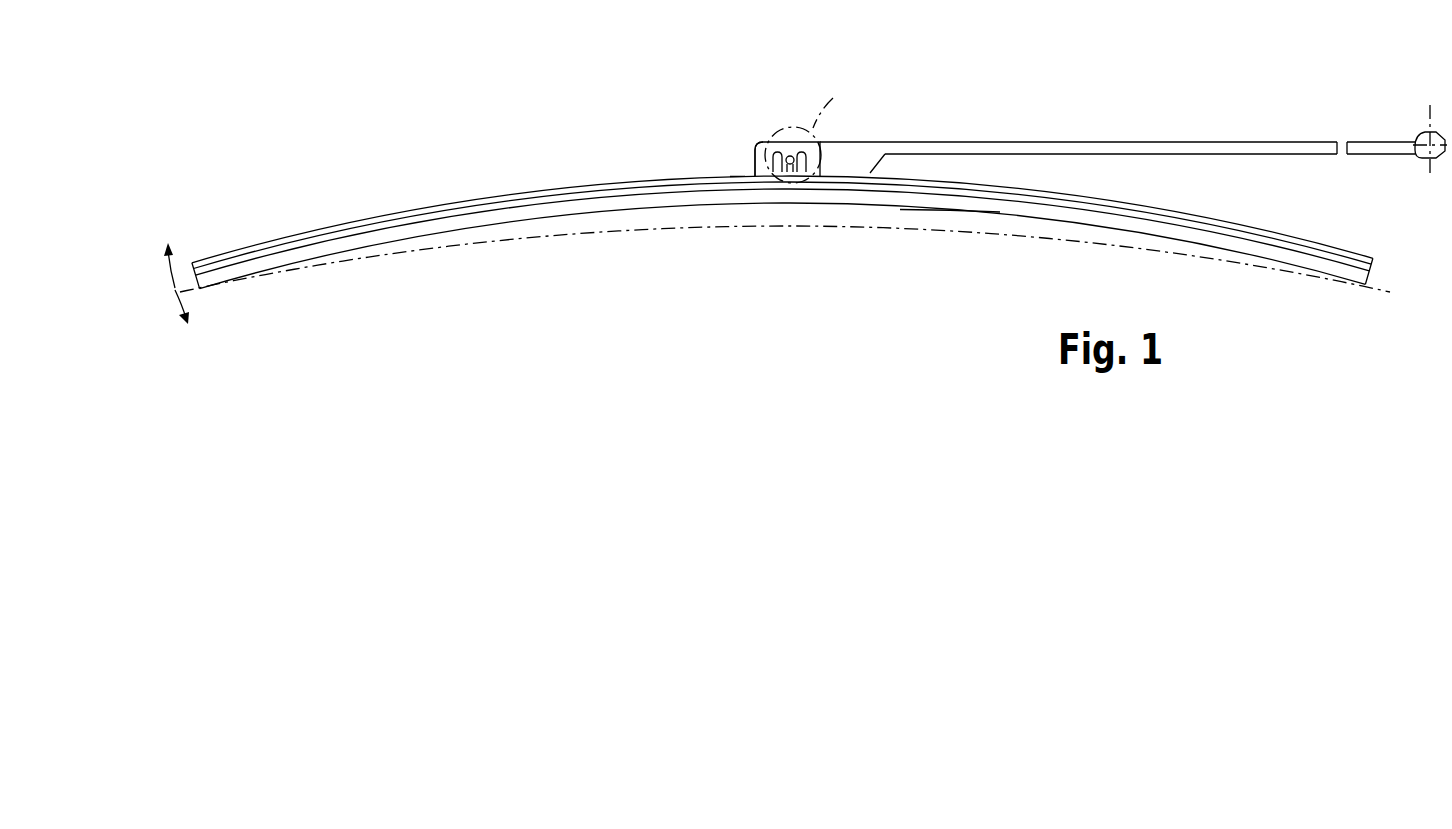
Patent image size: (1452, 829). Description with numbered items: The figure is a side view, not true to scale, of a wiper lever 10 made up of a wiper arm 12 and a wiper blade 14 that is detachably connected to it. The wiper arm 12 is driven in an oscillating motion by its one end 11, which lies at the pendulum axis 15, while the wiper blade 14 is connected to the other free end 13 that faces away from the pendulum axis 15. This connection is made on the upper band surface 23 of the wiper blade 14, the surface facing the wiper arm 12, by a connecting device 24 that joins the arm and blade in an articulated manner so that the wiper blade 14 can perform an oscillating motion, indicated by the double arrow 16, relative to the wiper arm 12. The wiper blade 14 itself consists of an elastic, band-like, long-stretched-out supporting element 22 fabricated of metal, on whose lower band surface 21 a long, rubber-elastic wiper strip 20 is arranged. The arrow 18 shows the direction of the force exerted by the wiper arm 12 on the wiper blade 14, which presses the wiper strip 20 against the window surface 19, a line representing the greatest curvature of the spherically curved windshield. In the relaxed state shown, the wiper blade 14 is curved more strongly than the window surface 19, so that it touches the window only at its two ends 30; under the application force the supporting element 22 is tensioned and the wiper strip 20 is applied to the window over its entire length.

The wiper lever 10 is at (862, 130).
The one end of the wiper arm 11 is at (1410, 126).
The wiper arm 12 is at (984, 130).
The free end of the wiper arm 13 is at (765, 125).
The wiper blade 14 is at (630, 176).
The pendulum axis 15 is at (1425, 165).
The double arrow (oscillating motion) 16 is at (175, 290).
The arrow (application force direction) 18 is at (735, 104).
The window surface 19 is at (767, 230).
The wiper strip 20 is at (957, 207).
The lower band surface 21 is at (1136, 213).
The supporting element 22 is at (1203, 217).
The upper band surface 23 is at (1090, 196).
The connecting device 24 is at (750, 152).
The ends of the wiper blade 30 is at (194, 246).